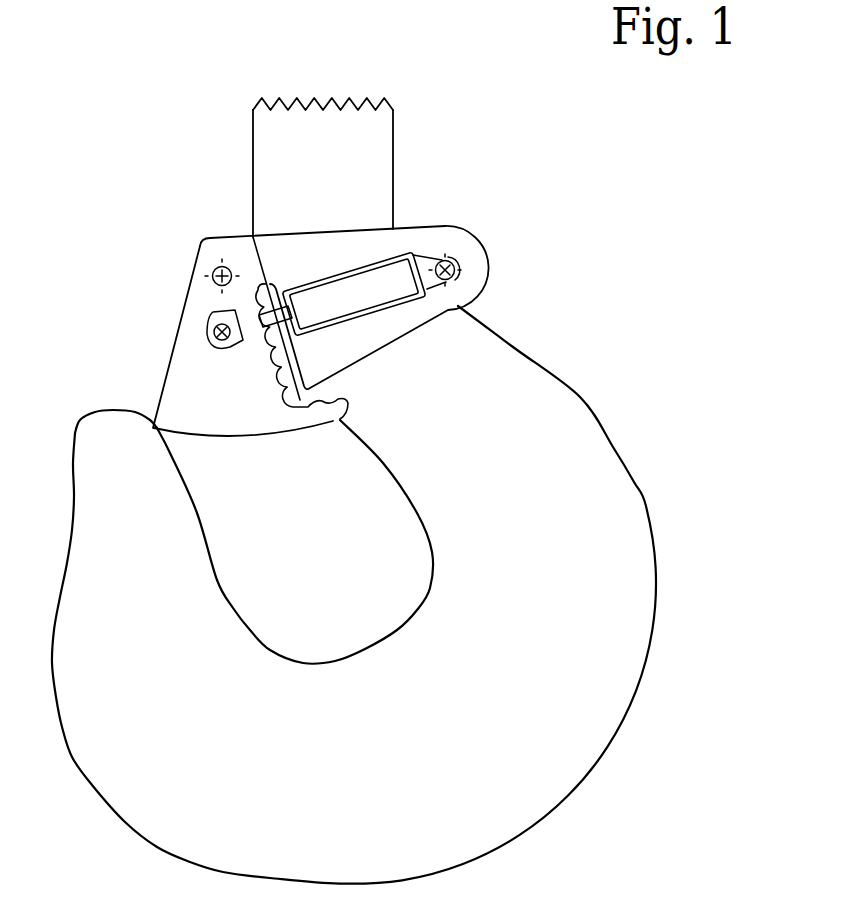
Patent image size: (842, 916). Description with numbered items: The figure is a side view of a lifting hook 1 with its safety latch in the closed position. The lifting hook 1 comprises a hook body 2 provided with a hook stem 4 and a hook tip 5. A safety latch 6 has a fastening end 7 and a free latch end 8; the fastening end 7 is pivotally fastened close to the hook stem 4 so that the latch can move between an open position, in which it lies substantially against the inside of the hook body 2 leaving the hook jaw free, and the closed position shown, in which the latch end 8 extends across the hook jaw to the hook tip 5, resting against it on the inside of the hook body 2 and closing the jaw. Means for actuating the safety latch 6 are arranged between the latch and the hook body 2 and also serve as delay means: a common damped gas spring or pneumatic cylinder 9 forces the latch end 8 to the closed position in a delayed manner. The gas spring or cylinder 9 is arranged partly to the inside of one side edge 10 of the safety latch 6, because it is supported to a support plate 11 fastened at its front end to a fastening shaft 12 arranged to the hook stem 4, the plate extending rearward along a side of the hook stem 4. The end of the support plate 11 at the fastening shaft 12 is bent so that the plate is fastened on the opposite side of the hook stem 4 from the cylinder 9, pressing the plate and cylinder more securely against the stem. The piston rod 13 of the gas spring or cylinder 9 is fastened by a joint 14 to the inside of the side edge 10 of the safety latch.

The lifting hook 1 is at (585, 793).
The hook body 2 is at (585, 398).
The hook stem 4 is at (393, 137).
The hook tip 5 is at (77, 423).
The safety latch 6 is at (178, 293).
The fastening end 7 is at (210, 247).
The latch end 8 is at (175, 400).
The gas spring or pneumatic cylinder 9 is at (410, 268).
The side edge of the safety latch 10 is at (248, 425).
The support plate 11 is at (327, 240).
The fastening shaft 12 is at (212, 267).
The piston rod 13 is at (275, 303).
The joint 14 is at (205, 331).